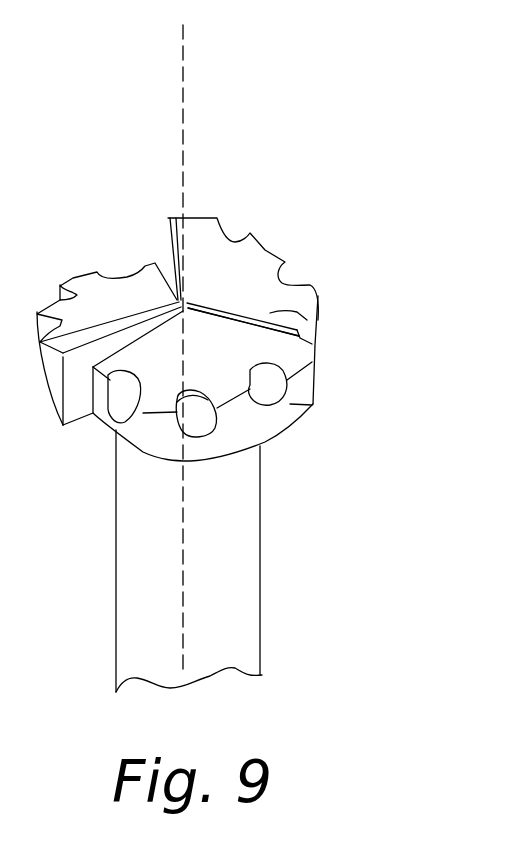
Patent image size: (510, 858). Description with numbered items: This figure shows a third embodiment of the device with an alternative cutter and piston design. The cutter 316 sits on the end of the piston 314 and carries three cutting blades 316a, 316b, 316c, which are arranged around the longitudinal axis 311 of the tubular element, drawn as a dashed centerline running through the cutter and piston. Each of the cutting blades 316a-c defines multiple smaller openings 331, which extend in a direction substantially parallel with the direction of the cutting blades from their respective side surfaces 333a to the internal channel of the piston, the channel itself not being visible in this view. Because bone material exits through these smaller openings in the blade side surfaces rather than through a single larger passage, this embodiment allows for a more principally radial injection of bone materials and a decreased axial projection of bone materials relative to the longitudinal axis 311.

The longitudinal axis 311 is at (180, 82).
The piston 314 is at (240, 598).
The cutter 316 is at (247, 258).
The cutting blade 316a is at (98, 294).
The cutting blade 316b is at (165, 359).
The cutting blade 316c is at (293, 297).
The smaller openings 331 is at (268, 383).
The side surface 333a is at (312, 405).